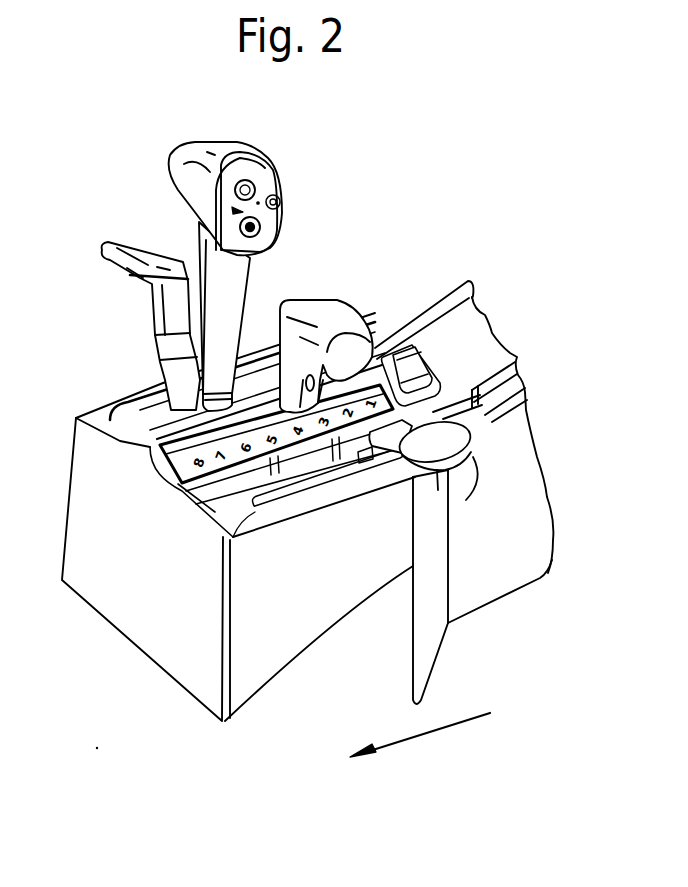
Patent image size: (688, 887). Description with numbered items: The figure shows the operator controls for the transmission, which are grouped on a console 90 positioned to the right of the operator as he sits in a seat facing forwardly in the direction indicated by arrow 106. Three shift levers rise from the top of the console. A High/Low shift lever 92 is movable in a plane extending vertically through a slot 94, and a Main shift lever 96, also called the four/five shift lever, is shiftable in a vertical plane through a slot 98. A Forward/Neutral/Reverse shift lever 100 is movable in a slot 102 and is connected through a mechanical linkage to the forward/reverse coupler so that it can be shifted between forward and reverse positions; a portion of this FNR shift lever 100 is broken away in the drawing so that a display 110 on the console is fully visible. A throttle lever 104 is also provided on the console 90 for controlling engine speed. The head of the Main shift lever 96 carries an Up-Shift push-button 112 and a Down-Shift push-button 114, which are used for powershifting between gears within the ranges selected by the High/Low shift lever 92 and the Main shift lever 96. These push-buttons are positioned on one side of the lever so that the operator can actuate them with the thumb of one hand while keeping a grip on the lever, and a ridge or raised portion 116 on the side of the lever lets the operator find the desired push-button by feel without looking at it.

The console 90 is at (392, 303).
The High/Low shift lever 92 is at (108, 242).
The slot 94 is at (145, 412).
The 4/5 shift lever 96 is at (203, 140).
The slot 98 is at (158, 453).
The FNR shift lever 100 is at (318, 297).
The slot 102 is at (234, 482).
The throttle lever 104 is at (465, 500).
The arrow 106 is at (397, 740).
The display 110 is at (347, 441).
The Up-Shift push-button 112 is at (253, 185).
The Down-Shift push-button 114 is at (258, 226).
The ridge or raised portion 116 is at (233, 209).